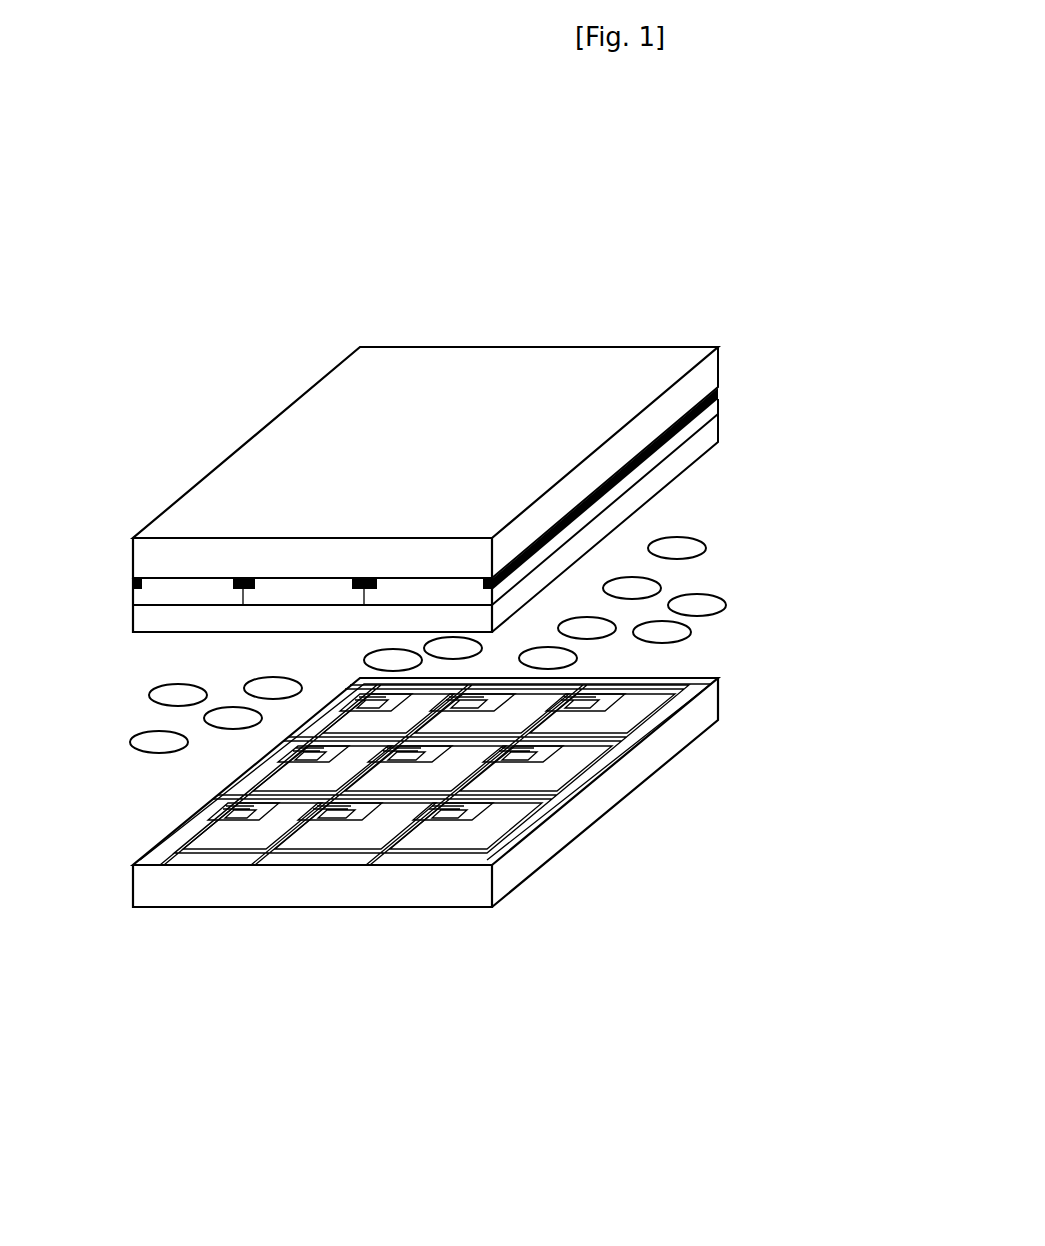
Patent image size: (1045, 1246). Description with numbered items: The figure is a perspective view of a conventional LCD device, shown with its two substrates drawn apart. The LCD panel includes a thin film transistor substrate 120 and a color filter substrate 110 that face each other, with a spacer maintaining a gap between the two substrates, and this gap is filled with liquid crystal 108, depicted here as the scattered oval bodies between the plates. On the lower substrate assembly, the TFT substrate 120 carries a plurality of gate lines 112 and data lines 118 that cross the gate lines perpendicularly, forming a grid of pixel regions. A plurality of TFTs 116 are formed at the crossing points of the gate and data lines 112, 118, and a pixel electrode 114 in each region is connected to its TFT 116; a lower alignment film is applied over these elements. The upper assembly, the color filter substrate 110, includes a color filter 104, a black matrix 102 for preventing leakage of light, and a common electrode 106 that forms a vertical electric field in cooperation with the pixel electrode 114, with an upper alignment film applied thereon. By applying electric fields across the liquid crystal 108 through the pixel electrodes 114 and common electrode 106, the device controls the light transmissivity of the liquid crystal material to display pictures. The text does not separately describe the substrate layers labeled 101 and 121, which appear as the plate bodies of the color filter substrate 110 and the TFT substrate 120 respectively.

The color filter substrate 110 is at (834, 340).
The upper substrate 101 is at (717, 373).
The color filter 104 is at (722, 403).
The common electrode 106 is at (722, 431).
The black matrix 102 is at (133, 583).
The liquid crystal 108 is at (695, 550).
The thin film transistor substrate 120 is at (836, 694).
The lower substrate 121 is at (708, 715).
The gate lines 112 is at (678, 683).
The data lines 118 is at (184, 834).
The pixel electrode 114 is at (500, 820).
The thin film transistor 116 is at (467, 814).